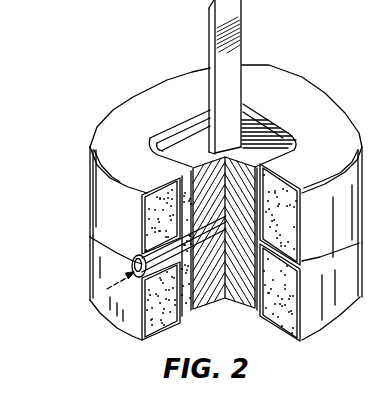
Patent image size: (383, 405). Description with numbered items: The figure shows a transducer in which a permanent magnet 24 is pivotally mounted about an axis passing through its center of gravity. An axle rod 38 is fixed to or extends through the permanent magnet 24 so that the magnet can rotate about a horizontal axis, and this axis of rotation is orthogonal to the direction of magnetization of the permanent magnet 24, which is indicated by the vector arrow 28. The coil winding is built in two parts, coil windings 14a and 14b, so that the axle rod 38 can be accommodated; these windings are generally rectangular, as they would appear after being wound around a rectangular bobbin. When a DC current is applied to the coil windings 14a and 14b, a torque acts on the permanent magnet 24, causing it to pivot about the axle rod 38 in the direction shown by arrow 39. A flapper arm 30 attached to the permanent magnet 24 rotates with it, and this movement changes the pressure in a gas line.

The coil winding part 14a is at (100, 206).
The coil winding part 14b is at (100, 274).
The permanent magnet 24 is at (180, 146).
The vector arrow 28 is at (247, 210).
The flapper arm 30 is at (245, 33).
The axle rod 38 is at (225, 292).
The arrow 39 is at (119, 263).